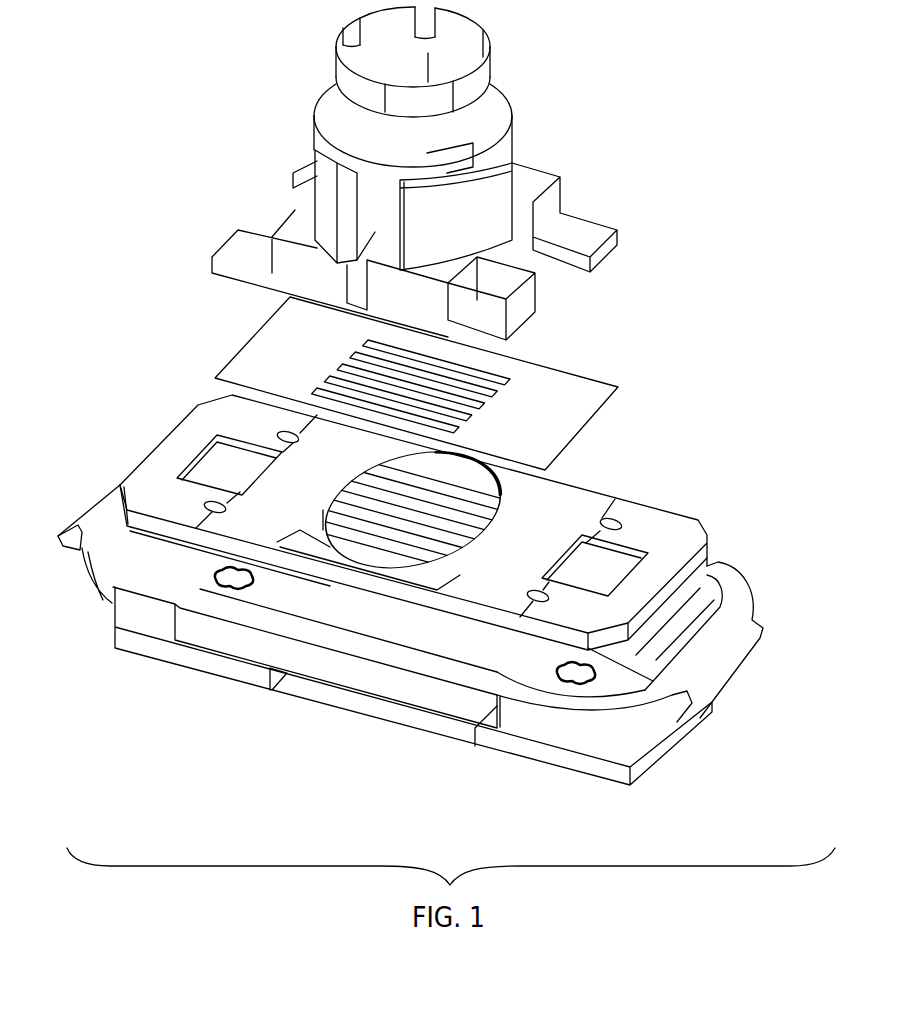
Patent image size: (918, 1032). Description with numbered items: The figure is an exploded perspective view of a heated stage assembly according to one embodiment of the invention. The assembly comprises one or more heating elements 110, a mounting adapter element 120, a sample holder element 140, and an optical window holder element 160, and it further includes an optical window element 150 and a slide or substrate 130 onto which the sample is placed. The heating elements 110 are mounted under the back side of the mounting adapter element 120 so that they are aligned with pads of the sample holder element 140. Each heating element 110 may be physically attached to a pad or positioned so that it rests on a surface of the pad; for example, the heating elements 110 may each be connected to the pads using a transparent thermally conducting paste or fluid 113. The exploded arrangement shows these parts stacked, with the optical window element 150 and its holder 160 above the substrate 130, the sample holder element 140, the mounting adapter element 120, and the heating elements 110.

The heating element 110 is at (627, 737).
The transparent thermally conducting paste or fluid 113 is at (213, 575).
The mounting adapter element 120 is at (733, 620).
The slide or substrate 130 is at (593, 392).
The sample holder element 140 is at (663, 537).
The optical window element 150 is at (473, 112).
The optical window holder element 160 is at (583, 237).